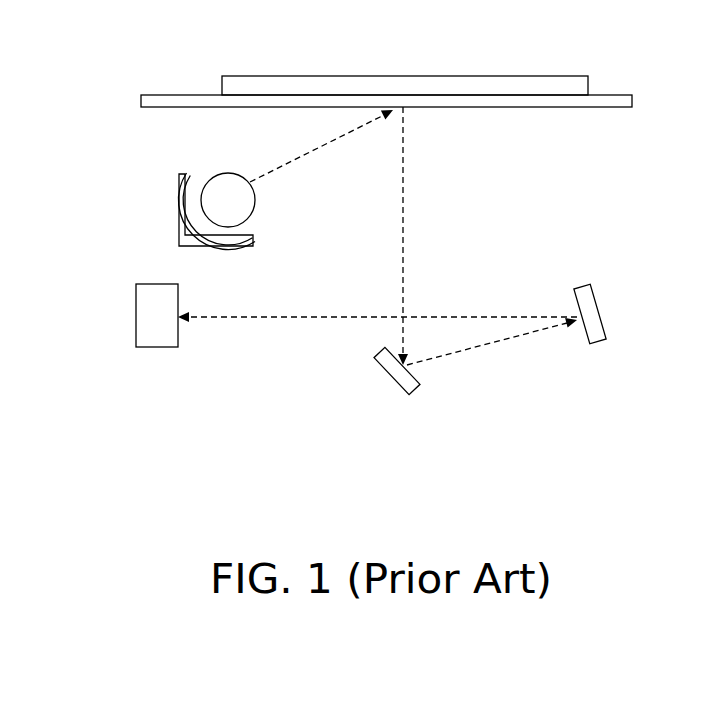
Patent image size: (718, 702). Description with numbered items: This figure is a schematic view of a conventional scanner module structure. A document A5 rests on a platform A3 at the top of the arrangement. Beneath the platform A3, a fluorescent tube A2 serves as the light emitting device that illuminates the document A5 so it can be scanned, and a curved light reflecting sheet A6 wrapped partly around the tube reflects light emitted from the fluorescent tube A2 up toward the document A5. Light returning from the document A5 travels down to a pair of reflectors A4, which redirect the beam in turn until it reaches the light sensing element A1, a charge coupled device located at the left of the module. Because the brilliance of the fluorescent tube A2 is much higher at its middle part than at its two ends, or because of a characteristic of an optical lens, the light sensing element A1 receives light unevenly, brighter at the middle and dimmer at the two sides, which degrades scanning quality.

The light sensing element A1 is at (160, 295).
The fluorescent tube A2 is at (230, 185).
The platform A3 is at (188, 102).
The reflectors A4 is at (593, 310).
The document A5 is at (404, 80).
The light reflecting sheet A6 is at (190, 185).